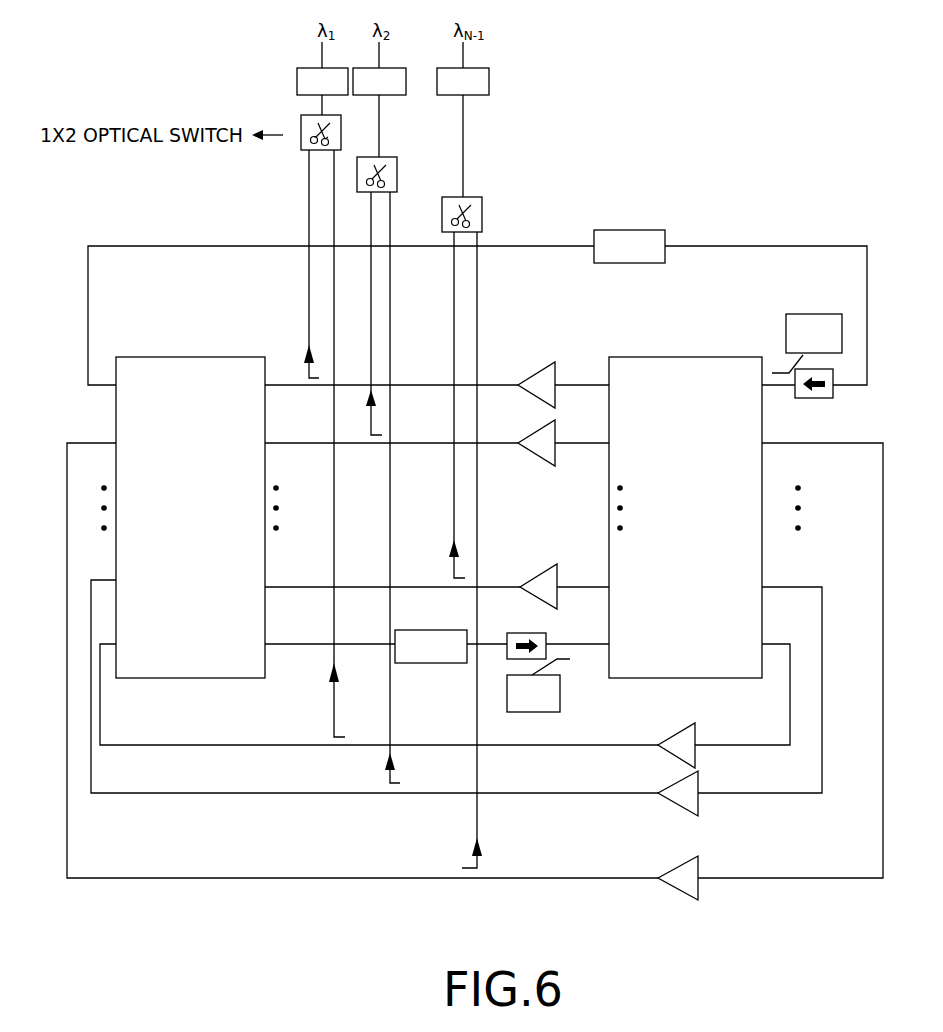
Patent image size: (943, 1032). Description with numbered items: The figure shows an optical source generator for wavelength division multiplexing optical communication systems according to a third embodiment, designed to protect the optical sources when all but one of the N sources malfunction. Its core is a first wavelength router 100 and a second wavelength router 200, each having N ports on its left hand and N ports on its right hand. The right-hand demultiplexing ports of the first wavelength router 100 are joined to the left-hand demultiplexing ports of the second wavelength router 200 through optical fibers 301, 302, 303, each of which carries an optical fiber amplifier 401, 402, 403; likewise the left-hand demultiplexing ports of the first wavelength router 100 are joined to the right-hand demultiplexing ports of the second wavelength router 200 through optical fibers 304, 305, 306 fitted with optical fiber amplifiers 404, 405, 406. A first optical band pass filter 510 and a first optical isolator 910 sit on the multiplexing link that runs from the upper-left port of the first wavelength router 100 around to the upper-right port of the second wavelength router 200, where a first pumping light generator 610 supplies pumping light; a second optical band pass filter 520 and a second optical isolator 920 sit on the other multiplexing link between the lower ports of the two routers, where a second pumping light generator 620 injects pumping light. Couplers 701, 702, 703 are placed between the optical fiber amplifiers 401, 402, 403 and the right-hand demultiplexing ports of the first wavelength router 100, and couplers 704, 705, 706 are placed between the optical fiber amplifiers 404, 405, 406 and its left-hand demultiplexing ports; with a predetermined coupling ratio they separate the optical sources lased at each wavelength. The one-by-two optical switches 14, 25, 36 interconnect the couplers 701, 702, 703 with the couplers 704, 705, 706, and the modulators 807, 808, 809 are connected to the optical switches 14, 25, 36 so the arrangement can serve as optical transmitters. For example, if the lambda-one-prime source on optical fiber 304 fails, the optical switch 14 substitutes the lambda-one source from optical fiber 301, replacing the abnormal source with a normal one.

The optical switch 14 is at (301, 146).
The optical switch 25 is at (397, 177).
The optical switch 36 is at (482, 214).
The first wavelength router 100 is at (203, 341).
The second wavelength router 200 is at (677, 357).
The optical fiber 301 is at (410, 385).
The optical fiber 302 is at (412, 443).
The optical fiber 303 is at (404, 586).
The optical fiber 304 is at (185, 744).
The optical fiber 305 is at (180, 792).
The optical fiber 306 is at (172, 877).
The optical fiber amplifier 401 is at (558, 362).
The optical fiber amplifier 402 is at (556, 432).
The optical fiber amplifier 403 is at (530, 563).
The optical fiber amplifier 404 is at (695, 730).
The optical fiber amplifier 405 is at (698, 782).
The optical fiber amplifier 406 is at (698, 866).
The first optical band pass filter 510 is at (626, 230).
The second optical band pass filter 520 is at (423, 664).
The first pumping light generator 610 is at (810, 314).
The second pumping light generator 620 is at (533, 712).
The coupler 701 is at (303, 349).
The coupler 702 is at (367, 396).
The coupler 703 is at (450, 531).
The coupler 704 is at (328, 672).
The coupler 705 is at (402, 761).
The coupler 706 is at (480, 843).
The modulator 807 is at (308, 68).
The modulator 808 is at (391, 68).
The modulator 809 is at (489, 84).
The first optical isolator 910 is at (815, 398).
The second optical isolator 920 is at (507, 659).